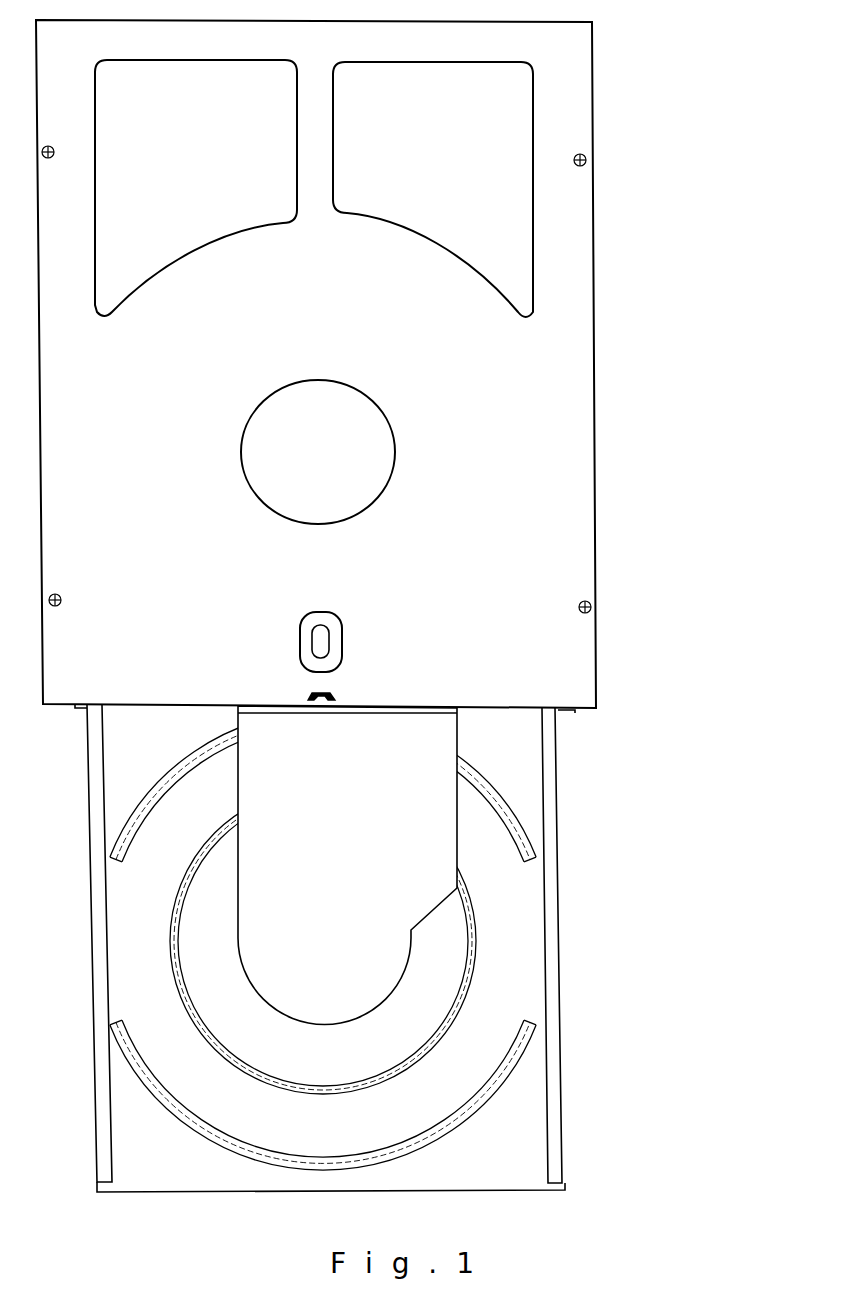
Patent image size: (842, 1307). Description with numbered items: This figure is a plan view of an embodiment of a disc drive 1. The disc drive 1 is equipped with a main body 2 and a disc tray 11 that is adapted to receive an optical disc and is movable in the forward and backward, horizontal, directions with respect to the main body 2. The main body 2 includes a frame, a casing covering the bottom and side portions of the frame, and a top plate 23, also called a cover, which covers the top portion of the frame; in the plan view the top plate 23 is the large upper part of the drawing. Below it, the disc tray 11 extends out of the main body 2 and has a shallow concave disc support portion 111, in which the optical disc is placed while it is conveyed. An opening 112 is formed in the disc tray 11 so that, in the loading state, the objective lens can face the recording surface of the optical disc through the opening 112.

The disc drive 1 is at (367, 606).
The main body 2 is at (360, 364).
The top plate 23 is at (532, 393).
The disc tray 11 is at (376, 948).
The disc support portion 111 is at (500, 965).
The opening 112 is at (340, 892).